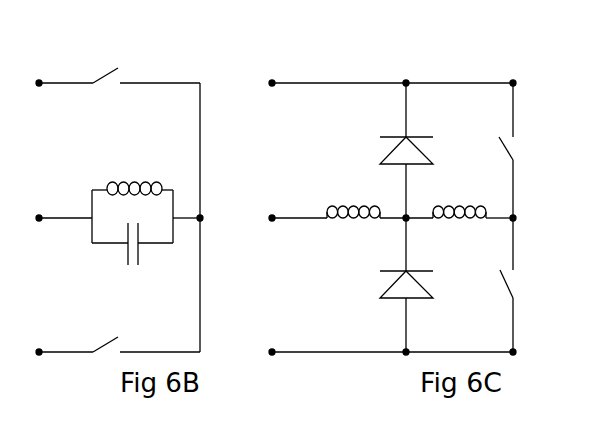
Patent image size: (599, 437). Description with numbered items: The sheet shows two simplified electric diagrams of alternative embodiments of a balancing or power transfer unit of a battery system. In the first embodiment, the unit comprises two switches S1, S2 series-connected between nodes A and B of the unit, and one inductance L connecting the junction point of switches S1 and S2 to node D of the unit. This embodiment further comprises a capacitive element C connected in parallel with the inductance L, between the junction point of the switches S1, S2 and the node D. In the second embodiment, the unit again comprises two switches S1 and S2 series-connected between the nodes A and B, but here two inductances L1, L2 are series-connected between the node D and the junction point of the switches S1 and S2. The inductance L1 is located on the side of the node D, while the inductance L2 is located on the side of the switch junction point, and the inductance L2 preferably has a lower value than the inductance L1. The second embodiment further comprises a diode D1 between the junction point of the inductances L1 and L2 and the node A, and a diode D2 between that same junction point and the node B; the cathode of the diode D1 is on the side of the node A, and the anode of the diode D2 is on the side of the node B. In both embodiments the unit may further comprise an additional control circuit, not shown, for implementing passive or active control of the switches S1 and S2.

In FIG. 6B, the node A is at (41, 80).
In FIG. 6C, the node A is at (274, 80).
In FIG. 6B, the node B is at (41, 349).
In FIG. 6C, the node B is at (274, 349).
In FIG. 6B, the node D is at (41, 215).
In FIG. 6C, the node D is at (274, 215).
In FIG. 6B, the switch S1 is at (106, 64).
In FIG. 6C, the switch S1 is at (520, 150).
In FIG. 6B, the switch S2 is at (107, 333).
In FIG. 6C, the switch S2 is at (520, 285).
In FIG. 6B, the inductance L is at (132, 174).
In FIG. 6B, the capacitive element C is at (132, 257).
In FIG. 6C, the inductance L1 is at (353, 227).
In FIG. 6C, the inductance L2 is at (459, 227).
In FIG. 6C, the diode D1 is at (421, 150).
In FIG. 6C, the diode D2 is at (421, 285).